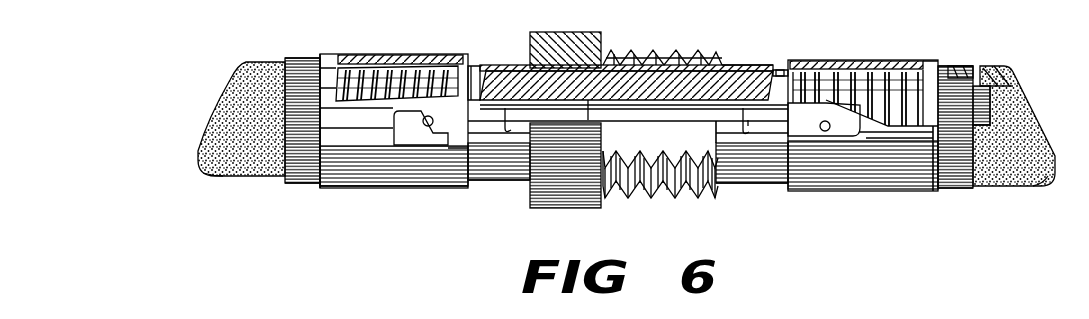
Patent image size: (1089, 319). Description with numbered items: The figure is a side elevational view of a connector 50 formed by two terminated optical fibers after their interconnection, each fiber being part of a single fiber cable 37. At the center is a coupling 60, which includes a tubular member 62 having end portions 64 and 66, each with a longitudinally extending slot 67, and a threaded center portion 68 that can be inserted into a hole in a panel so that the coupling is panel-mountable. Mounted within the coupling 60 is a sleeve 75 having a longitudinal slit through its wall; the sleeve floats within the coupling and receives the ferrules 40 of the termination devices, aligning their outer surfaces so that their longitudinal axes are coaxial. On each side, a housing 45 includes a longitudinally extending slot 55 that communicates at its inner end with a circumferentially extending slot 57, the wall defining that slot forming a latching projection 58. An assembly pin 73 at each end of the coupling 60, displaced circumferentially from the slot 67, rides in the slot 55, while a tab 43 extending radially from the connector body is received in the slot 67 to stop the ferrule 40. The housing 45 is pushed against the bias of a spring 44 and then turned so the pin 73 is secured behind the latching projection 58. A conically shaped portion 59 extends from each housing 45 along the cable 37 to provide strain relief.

The connector 50 is at (144, 35).
The portion 59 is at (247, 57).
The single fiber cable 37 is at (212, 171).
The longitudinally extending slot 55 is at (442, 150).
The circumferentially extending slot 57 is at (402, 126).
The assembly pin 73 is at (432, 107).
The spring 44 is at (372, 64).
The housing 45 is at (412, 48).
The end portion 66 is at (467, 60).
The coupling 60 is at (500, 56).
The sleeve 75 is at (583, 68).
The ferrule 40 is at (618, 98).
The center portion 68 is at (621, 48).
The tubular member 62 is at (684, 56).
The end portion 64 is at (753, 58).
The longitudinally extending slot 67 is at (766, 60).
The tab 43 is at (776, 62).
The latching projection 58 is at (816, 100).